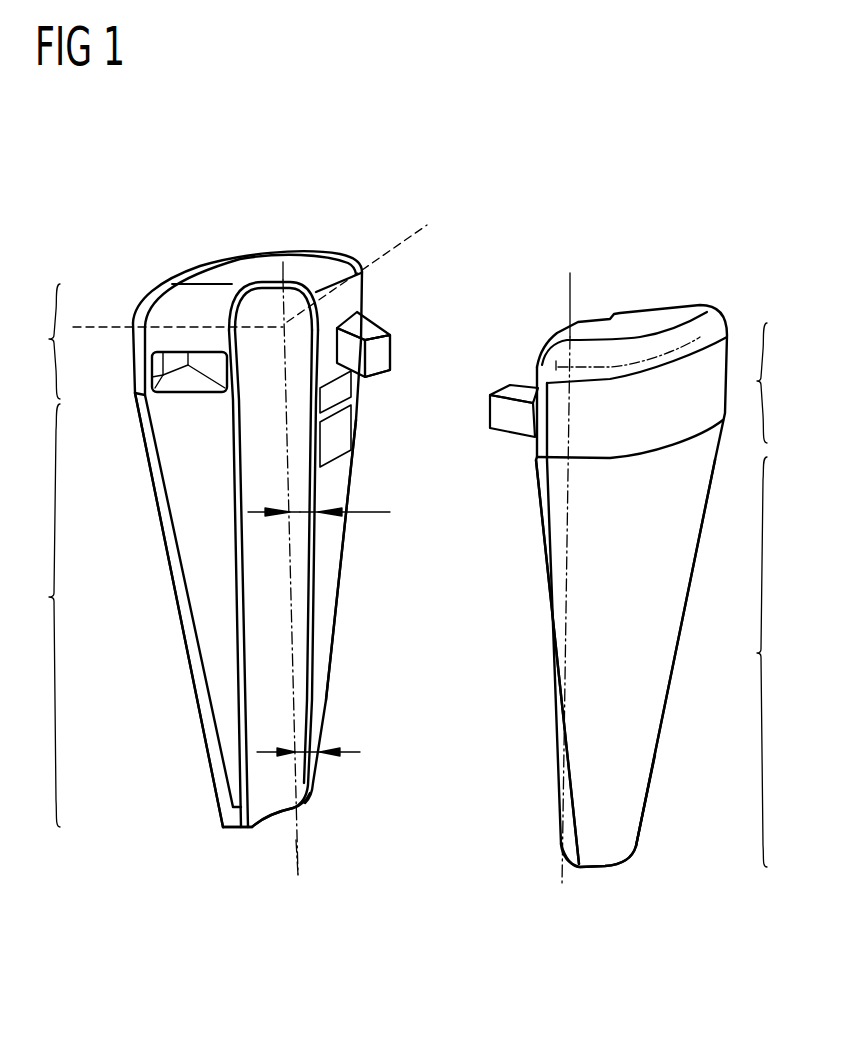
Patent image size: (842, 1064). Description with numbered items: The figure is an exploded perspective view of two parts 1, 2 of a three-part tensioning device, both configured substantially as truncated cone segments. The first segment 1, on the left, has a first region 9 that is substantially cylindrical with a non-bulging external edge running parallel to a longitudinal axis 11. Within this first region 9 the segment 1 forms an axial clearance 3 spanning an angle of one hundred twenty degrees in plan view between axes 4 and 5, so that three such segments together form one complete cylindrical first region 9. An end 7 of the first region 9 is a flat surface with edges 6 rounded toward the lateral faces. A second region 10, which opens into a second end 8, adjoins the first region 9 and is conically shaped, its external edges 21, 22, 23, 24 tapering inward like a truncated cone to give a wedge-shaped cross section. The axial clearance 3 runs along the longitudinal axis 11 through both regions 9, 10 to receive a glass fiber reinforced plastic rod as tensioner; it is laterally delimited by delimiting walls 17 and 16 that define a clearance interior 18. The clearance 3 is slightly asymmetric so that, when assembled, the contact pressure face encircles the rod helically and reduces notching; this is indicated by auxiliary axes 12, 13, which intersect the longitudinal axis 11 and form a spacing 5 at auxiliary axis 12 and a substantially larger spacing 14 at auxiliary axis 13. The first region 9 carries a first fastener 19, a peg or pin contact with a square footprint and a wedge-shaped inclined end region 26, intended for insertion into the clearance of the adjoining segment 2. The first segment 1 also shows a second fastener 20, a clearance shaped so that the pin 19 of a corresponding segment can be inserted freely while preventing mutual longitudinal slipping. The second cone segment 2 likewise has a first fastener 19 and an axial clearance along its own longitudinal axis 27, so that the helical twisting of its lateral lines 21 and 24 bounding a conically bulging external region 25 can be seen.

The first cone segment 1 is at (192, 205).
The second cone segment 2 is at (735, 258).
The axial clearance 3 is at (263, 297).
The axis 4 is at (93, 325).
The axis / spacing 5 is at (400, 245).
The rounded edges 6 is at (170, 282).
The end 7 is at (270, 267).
The second end 8 is at (263, 823).
The first region 9 is at (411, 363).
The second region 10 is at (411, 635).
The longitudinal axis 11 is at (300, 863).
The auxiliary axis 12 is at (353, 753).
The auxiliary axis 13 is at (367, 507).
The spacing 14 is at (303, 507).
The delimiting wall 16 is at (320, 638).
The delimiting wall 17 is at (240, 638).
The clearance interior 18 is at (250, 573).
The first fastener 19 is at (405, 328).
The second fastener 20 is at (177, 362).
The external edge 21 is at (536, 535).
The external edge 22 is at (333, 688).
The external edge 23 is at (157, 507).
The external edge 24 is at (676, 664).
The external region 25 is at (640, 769).
The end region 26 is at (375, 362).
The longitudinal axis 27 is at (569, 287).